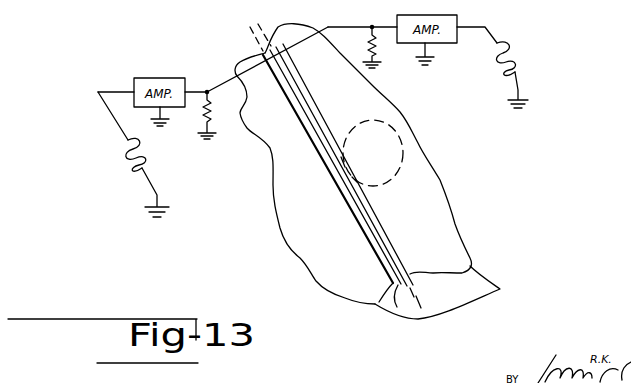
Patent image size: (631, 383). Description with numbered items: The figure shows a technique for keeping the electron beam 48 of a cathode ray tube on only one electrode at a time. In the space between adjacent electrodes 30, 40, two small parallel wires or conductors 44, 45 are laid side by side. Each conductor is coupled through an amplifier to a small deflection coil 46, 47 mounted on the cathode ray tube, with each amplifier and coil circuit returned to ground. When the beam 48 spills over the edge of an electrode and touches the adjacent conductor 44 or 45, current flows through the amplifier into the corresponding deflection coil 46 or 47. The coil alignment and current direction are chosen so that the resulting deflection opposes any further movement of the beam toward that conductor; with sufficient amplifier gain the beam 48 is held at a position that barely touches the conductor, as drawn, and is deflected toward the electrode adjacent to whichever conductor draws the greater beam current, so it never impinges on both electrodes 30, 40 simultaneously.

The electrode 30 is at (399, 171).
The electrode 40 is at (500, 289).
The conductor 44 is at (335, 167).
The conductor 45 is at (412, 278).
The deflection coil 46 is at (514, 57).
The deflection coil 47 is at (123, 163).
The electron beam 48 is at (400, 142).